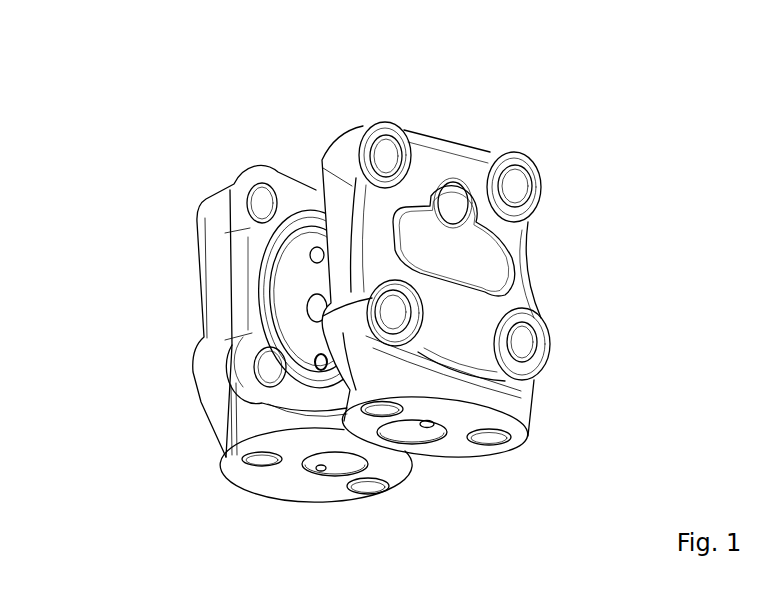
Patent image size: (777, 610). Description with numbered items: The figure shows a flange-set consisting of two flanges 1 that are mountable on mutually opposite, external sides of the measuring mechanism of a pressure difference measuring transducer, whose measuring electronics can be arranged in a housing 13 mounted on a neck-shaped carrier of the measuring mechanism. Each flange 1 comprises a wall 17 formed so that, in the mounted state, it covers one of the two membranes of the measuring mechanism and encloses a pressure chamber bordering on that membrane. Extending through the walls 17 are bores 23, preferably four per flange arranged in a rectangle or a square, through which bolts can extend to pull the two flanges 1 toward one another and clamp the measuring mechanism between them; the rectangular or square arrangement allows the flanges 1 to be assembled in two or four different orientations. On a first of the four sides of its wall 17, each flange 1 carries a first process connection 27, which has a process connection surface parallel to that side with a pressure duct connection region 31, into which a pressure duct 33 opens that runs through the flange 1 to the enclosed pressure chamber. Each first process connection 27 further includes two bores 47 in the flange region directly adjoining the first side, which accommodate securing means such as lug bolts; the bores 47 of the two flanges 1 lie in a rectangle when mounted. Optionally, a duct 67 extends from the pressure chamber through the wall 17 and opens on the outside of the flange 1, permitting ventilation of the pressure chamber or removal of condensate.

The flange 1 is at (322, 102).
The housing 13 is at (305, 292).
The wall 17 is at (507, 273).
The bores 23 is at (258, 200).
The first process connection 27 is at (515, 412).
The pressure duct connection region 31 is at (400, 428).
The pressure duct 33 is at (427, 424).
The bores 47 is at (507, 448).
The duct 67 is at (455, 190).